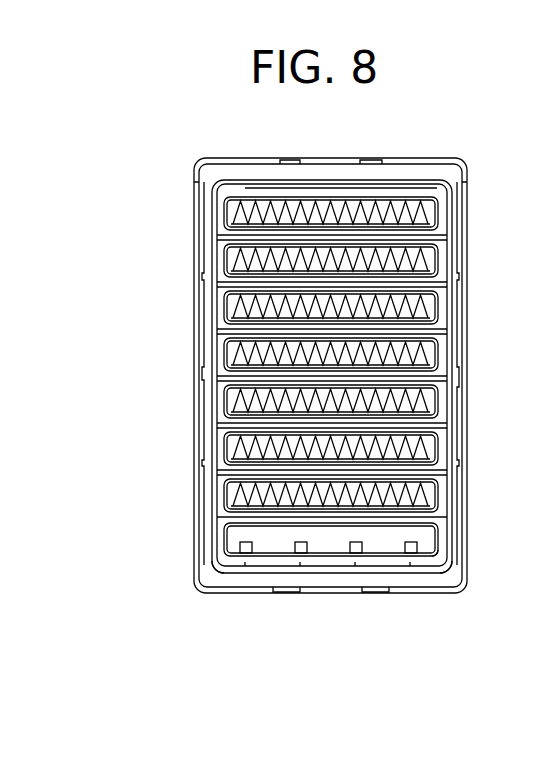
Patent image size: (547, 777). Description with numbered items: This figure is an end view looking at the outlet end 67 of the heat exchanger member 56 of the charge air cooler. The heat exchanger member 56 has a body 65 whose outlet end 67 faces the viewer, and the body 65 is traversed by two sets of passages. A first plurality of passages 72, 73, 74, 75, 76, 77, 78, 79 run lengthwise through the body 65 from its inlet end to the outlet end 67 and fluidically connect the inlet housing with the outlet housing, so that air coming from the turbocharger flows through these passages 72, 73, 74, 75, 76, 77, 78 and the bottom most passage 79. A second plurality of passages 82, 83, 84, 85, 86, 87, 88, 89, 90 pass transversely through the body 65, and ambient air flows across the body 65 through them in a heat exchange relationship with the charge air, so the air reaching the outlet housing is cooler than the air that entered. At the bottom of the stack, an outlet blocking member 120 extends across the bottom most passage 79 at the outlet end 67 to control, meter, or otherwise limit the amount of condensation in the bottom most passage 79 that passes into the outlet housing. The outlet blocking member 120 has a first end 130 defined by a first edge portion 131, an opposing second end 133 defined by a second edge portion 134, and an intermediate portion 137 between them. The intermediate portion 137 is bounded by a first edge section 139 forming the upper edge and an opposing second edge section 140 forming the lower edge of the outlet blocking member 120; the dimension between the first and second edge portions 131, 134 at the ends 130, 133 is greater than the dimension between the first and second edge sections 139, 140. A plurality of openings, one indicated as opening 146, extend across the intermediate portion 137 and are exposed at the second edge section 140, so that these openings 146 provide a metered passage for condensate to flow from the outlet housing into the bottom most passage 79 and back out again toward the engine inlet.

The heat exchanger member 56 is at (93, 211).
The body 65 is at (199, 162).
The outlet end 67 is at (257, 198).
The passage 72 is at (238, 212).
The passage 73 is at (238, 259).
The passage 74 is at (238, 306).
The passage 75 is at (238, 353).
The passage 76 is at (238, 400).
The passage 77 is at (238, 447).
The passage 78 is at (238, 494).
The bottom most passage 79 is at (388, 530).
The passage 82 is at (347, 188).
The passage 83 is at (377, 236).
The passage 84 is at (377, 286).
The passage 85 is at (377, 332).
The passage 86 is at (377, 379).
The passage 87 is at (377, 426).
The passage 88 is at (377, 472).
The passage 89 is at (377, 519).
The passage 90 is at (310, 565).
The outlet blocking member 120 is at (434, 573).
The first end 130 is at (207, 539).
The first edge portion 131 is at (228, 548).
The second end 133 is at (442, 536).
The second edge portion 134 is at (432, 551).
The intermediate portion 137 is at (327, 538).
The first edge section 139 is at (265, 528).
The second edge section 140 is at (372, 548).
The opening 146 is at (293, 548).